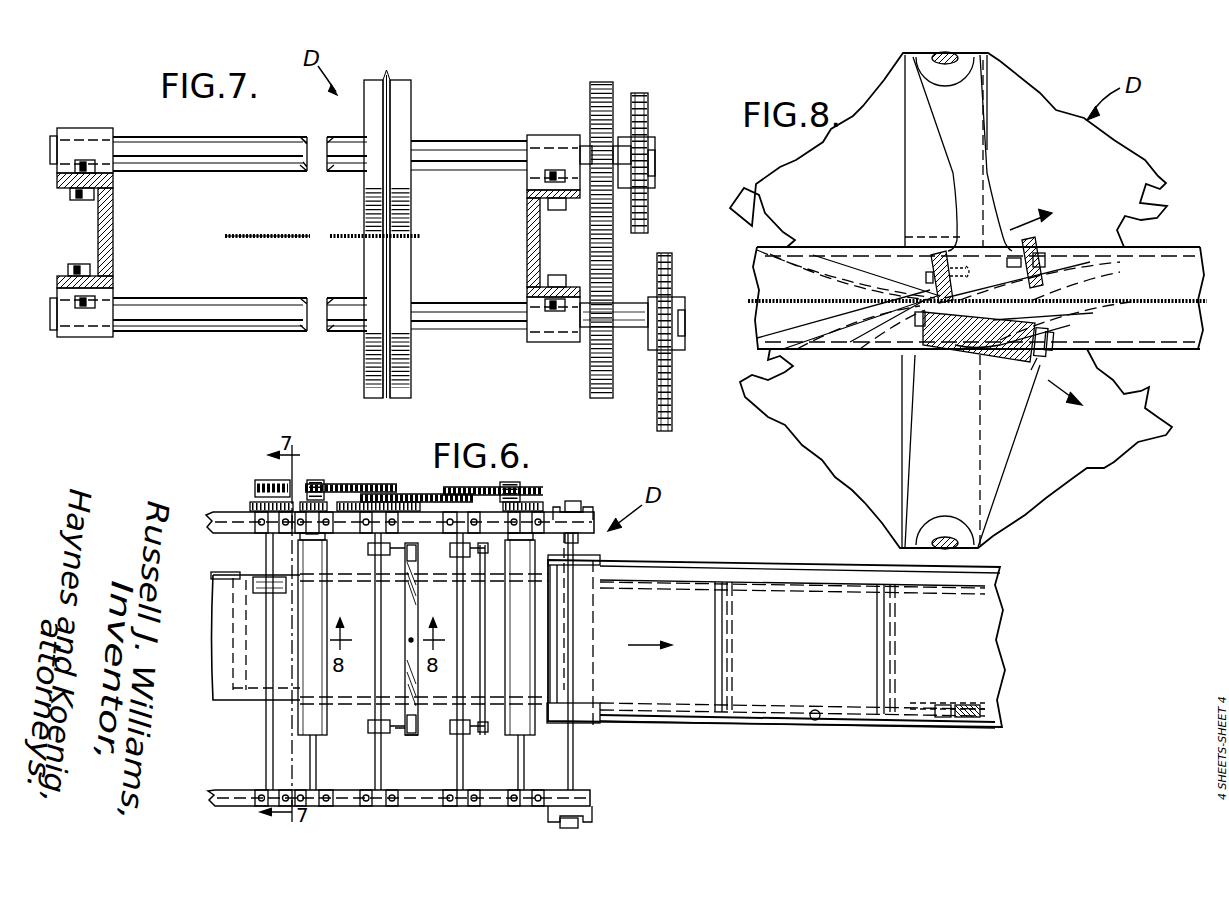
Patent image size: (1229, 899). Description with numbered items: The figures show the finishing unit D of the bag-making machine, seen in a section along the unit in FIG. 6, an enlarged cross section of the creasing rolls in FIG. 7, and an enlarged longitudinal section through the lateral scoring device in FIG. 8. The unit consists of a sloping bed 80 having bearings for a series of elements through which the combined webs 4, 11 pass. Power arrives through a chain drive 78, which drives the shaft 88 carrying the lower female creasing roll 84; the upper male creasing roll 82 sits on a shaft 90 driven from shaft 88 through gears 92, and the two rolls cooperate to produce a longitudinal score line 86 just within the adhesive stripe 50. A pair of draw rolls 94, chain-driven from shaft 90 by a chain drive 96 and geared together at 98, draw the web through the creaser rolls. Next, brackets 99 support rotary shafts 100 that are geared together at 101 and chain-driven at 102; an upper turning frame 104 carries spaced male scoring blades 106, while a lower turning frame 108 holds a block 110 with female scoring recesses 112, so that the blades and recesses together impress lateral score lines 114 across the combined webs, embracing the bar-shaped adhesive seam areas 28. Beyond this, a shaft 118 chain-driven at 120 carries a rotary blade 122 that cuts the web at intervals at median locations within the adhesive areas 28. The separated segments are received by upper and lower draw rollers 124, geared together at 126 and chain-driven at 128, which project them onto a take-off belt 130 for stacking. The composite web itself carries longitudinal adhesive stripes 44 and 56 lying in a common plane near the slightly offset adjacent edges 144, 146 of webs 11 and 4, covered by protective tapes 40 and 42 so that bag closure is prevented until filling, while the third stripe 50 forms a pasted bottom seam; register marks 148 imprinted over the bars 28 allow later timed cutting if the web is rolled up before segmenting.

In FIG. 7, the web 4 is at (270, 240).
In FIG. 8, the web 4 is at (1160, 308).
In FIG. 6, the web 4 is at (968, 664).
In FIG. 7, the web 11 is at (282, 233).
In FIG. 8, the web 11 is at (1162, 305).
In FIG. 6, the web 11 is at (955, 622).
In FIG. 6, the bars of adhesive 28 is at (222, 645).
In FIG. 6, the protective tape 40 is at (940, 716).
In FIG. 6, the protective tape 42 is at (953, 718).
In FIG. 6, the adhesive stripe 44 is at (835, 698).
In FIG. 6, the adhesive stripe 50 is at (815, 592).
In FIG. 6, the adhesive stripe 56 is at (912, 704).
In FIG. 7, the chain drive 78 is at (672, 398).
In FIG. 6, the chain drive 78 is at (262, 484).
In FIG. 7, the sloping bed 80 is at (109, 228).
In FIG. 8, the sloping bed 80 is at (763, 327).
In FIG. 6, the sloping bed 80 is at (245, 527).
In FIG. 7, the male creasing roll 82 is at (402, 115).
In FIG. 6, the male creasing roll 82 is at (262, 594).
In FIG. 7, the female creasing roll 84 is at (395, 353).
In FIG. 6, the score line 86 is at (630, 590).
In FIG. 7, the shaft 88 is at (476, 318).
In FIG. 7, the shaft 90 is at (448, 158).
In FIG. 6, the shaft 90 is at (266, 740).
In FIG. 7, the gears 92 is at (613, 248).
In FIG. 6, the gears 92 is at (250, 505).
In FIG. 6, the draw rolls 94 is at (322, 598).
In FIG. 7, the chain drive 96 is at (650, 98).
In FIG. 6, the chain drive 96 is at (320, 484).
In FIG. 6, the gears 98 is at (322, 528).
In FIG. 8, the brackets 99 is at (905, 165).
In FIG. 6, the brackets 99 is at (376, 545).
In FIG. 8, the rotary shafts 100 is at (962, 80).
In FIG. 6, the rotary shafts 100 is at (372, 688).
In FIG. 8, the gears 101 is at (1140, 212).
In FIG. 6, the gears 101 is at (398, 494).
In FIG. 6, the chain drive 102 is at (356, 484).
In FIG. 8, the turning frame 104 is at (995, 196).
In FIG. 6, the turning frame 104 is at (416, 602).
In FIG. 8, the male scoring blades 106 is at (928, 278).
In FIG. 6, the male scoring blades 106 is at (412, 722).
In FIG. 8, the turning frame 108 is at (1020, 432).
In FIG. 8, the block 110 is at (978, 348).
In FIG. 8, the female scoring recesses 112 is at (1045, 323).
In FIG. 8, the lateral score lines 114 is at (1040, 300).
In FIG. 6, the lateral score lines 114 is at (575, 652).
In FIG. 6, the shaft 118 is at (462, 765).
In FIG. 6, the chain drive 120 is at (455, 487).
In FIG. 6, the rotary blade 122 is at (486, 735).
In FIG. 6, the draw rollers 124 is at (525, 735).
In FIG. 6, the gears 126 is at (538, 504).
In FIG. 6, the chain drive 128 is at (505, 484).
In FIG. 6, the take-off belt 130 is at (668, 568).
In FIG. 6, the edge of web 11 144 is at (815, 722).
In FIG. 6, the edge of web 4 146 is at (765, 726).
In FIG. 6, the register marks 148 is at (210, 576).